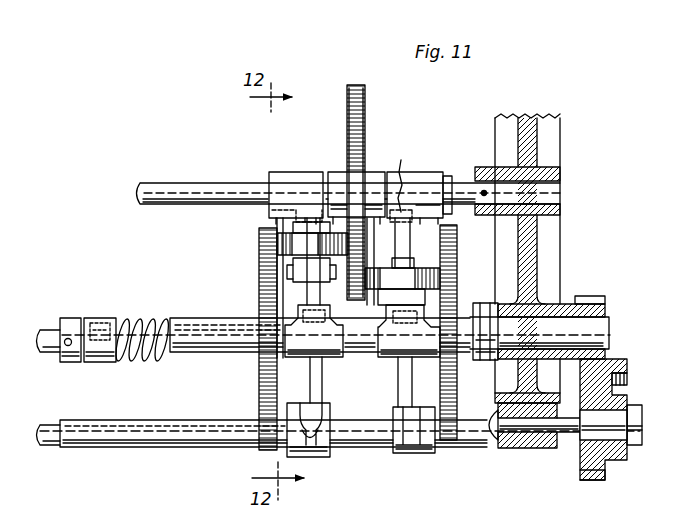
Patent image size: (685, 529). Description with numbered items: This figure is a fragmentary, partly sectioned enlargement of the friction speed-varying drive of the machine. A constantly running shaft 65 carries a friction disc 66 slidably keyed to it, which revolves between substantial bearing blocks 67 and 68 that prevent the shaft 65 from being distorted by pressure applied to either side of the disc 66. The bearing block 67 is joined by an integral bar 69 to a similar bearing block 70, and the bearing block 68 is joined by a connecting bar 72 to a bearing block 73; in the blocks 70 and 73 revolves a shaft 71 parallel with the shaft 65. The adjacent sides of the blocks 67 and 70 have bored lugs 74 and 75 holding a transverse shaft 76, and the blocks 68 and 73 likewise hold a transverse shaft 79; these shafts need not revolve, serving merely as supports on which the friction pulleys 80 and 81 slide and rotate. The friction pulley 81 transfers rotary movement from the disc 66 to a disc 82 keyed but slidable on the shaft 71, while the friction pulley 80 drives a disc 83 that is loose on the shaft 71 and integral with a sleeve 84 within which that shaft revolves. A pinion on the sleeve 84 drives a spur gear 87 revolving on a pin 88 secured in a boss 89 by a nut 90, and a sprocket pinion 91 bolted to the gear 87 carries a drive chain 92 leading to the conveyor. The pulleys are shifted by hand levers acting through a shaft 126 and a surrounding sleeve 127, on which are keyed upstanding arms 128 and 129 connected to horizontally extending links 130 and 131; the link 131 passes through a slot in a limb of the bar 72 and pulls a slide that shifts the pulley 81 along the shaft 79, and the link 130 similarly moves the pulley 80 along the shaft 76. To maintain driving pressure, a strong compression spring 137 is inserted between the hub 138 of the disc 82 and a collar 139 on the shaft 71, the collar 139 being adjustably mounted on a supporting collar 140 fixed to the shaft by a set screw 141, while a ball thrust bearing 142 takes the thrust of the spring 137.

The constantly running shaft 65 is at (550, 188).
The friction disc 66 is at (366, 102).
The bearing block 67 is at (425, 172).
The bearing block 68 is at (300, 170).
The integral bar 69 is at (448, 212).
The bearing block 70 is at (383, 357).
The shaft 71 is at (42, 331).
The connecting bar 72 is at (290, 306).
The bearing block 73 is at (328, 360).
The bored lug 74 is at (401, 176).
The bored lug 75 is at (385, 316).
The transverse shaft 76 is at (404, 246).
The transverse shaft 79 is at (293, 275).
The friction pulley 80 is at (376, 290).
The friction pulley 81 is at (277, 246).
The disc 82 is at (258, 388).
The disc 83 is at (457, 244).
The sleeve 84 is at (585, 326).
The spur gear 87 is at (595, 480).
The pin 88 is at (580, 440).
The boss 89 is at (527, 448).
The nut 90 is at (488, 441).
The sprocket pinion 91 is at (642, 440).
The drive chain 92 is at (628, 382).
The shaft 126 is at (45, 445).
The sleeve 127 is at (135, 448).
The upstanding arm 128 is at (409, 455).
The upstanding arm 129 is at (323, 455).
The link 130 is at (405, 386).
The link 131 is at (322, 392).
The compression spring 137 is at (146, 363).
The hub 138 is at (198, 318).
The collar 139 is at (90, 362).
The supporting collar 140 is at (68, 318).
The set screw 141 is at (64, 345).
The ball thrust bearing 142 is at (480, 317).